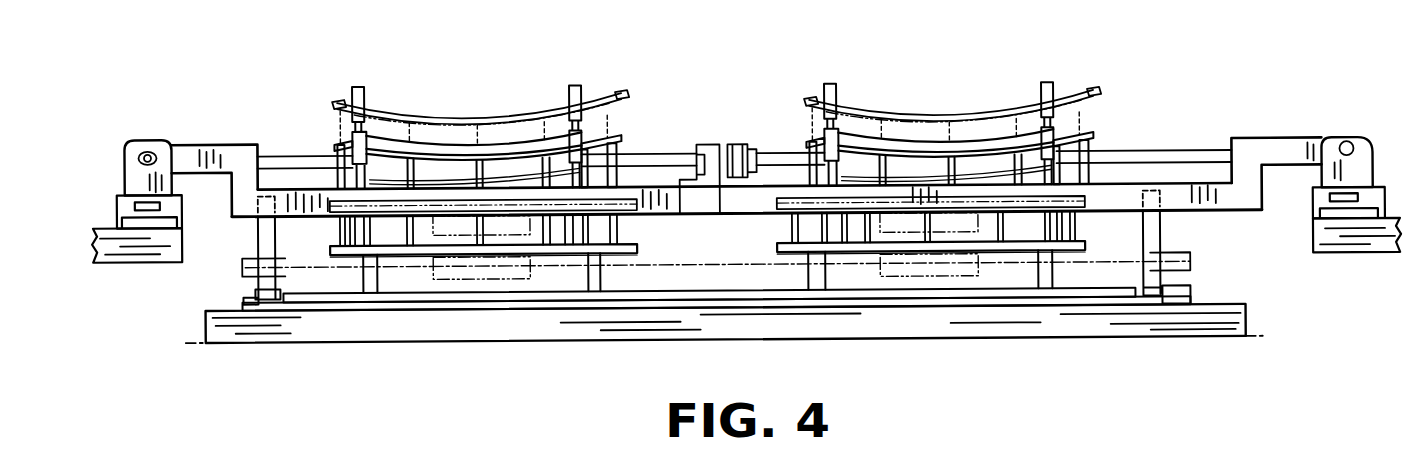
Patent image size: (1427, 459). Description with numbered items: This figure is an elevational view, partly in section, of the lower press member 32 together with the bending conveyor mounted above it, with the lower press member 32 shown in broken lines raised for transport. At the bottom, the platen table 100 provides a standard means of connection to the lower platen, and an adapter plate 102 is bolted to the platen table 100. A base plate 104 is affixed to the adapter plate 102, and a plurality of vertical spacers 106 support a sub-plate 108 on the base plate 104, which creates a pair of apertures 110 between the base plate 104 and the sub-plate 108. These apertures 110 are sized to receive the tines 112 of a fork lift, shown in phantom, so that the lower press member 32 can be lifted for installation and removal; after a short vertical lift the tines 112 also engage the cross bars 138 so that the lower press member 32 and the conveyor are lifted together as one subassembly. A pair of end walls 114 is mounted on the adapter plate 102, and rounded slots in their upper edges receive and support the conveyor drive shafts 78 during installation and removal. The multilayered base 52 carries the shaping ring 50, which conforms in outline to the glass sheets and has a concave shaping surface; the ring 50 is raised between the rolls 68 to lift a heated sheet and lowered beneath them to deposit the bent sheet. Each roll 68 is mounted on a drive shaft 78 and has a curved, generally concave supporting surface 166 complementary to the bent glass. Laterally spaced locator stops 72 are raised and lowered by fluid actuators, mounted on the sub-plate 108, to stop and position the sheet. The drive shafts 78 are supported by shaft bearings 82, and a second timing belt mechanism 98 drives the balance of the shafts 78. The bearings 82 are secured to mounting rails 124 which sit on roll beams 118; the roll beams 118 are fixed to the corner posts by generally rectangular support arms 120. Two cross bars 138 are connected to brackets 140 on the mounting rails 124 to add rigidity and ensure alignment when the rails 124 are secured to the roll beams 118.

The lower press member 32 is at (1152, 80).
The shaping ring 50 is at (622, 147).
The multilayered base 52 is at (272, 337).
The conveyor rolls 68 is at (522, 152).
The locator stops 72 is at (365, 136).
The conveyor drive shafts 78 is at (312, 160).
The shaft bearings 82 is at (706, 152).
The second timing belt mechanism 98 is at (738, 150).
The platen table 100 is at (1176, 337).
The adapter plate 102 is at (323, 305).
The base plate 104 is at (410, 299).
The vertical spacers 106 is at (368, 279).
The sub-plate 108 is at (555, 252).
The apertures 110 is at (425, 283).
The fork lift tines 112 is at (510, 281).
The end walls 114 is at (262, 239).
The roll beams 118 is at (168, 217).
The support arms 120 is at (115, 257).
The mounting rails 124 is at (133, 187).
The cross bars 138 is at (245, 158).
The brackets 140 is at (160, 148).
The concave supporting surface 166 is at (460, 147).